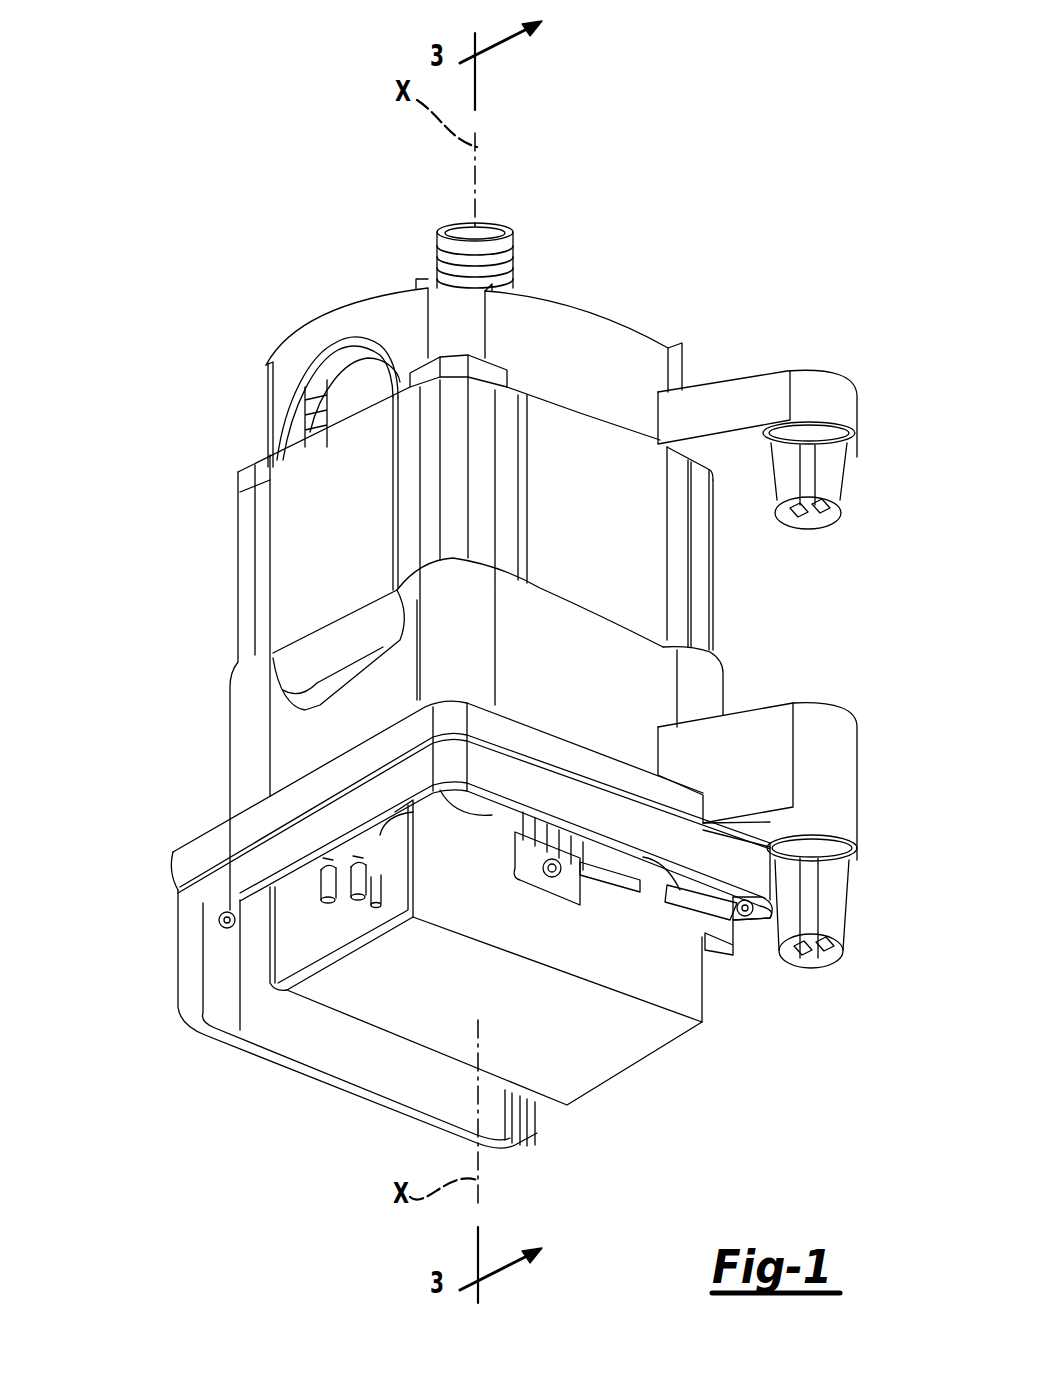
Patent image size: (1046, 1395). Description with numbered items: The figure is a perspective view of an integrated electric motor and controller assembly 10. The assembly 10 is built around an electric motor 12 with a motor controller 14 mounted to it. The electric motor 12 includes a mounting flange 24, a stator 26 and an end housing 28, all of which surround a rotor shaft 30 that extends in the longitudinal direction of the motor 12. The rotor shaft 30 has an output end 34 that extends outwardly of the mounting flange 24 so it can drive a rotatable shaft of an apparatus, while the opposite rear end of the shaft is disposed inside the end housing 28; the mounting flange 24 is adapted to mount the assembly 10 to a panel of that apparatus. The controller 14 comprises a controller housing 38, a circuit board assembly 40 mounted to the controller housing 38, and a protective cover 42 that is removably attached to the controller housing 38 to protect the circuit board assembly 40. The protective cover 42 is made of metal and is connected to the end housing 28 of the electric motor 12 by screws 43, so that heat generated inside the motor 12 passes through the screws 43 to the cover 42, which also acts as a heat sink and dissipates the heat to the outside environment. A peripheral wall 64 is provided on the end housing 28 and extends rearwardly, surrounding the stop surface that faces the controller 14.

The integrated electric motor and controller assembly 10 is at (262, 110).
The electric motor 12 is at (212, 606).
The motor controller 14 is at (150, 944).
The mounting flange 24 is at (600, 307).
The stator 26 is at (713, 575).
The end housing 28 is at (723, 677).
The rotor shaft 30 is at (396, 242).
The output end 34 is at (452, 237).
The controller housing 38 is at (175, 994).
The circuit board assembly 40 is at (365, 845).
The protective cover 42 is at (625, 1080).
The screws 43 is at (222, 932).
The peripheral wall 64 is at (172, 862).